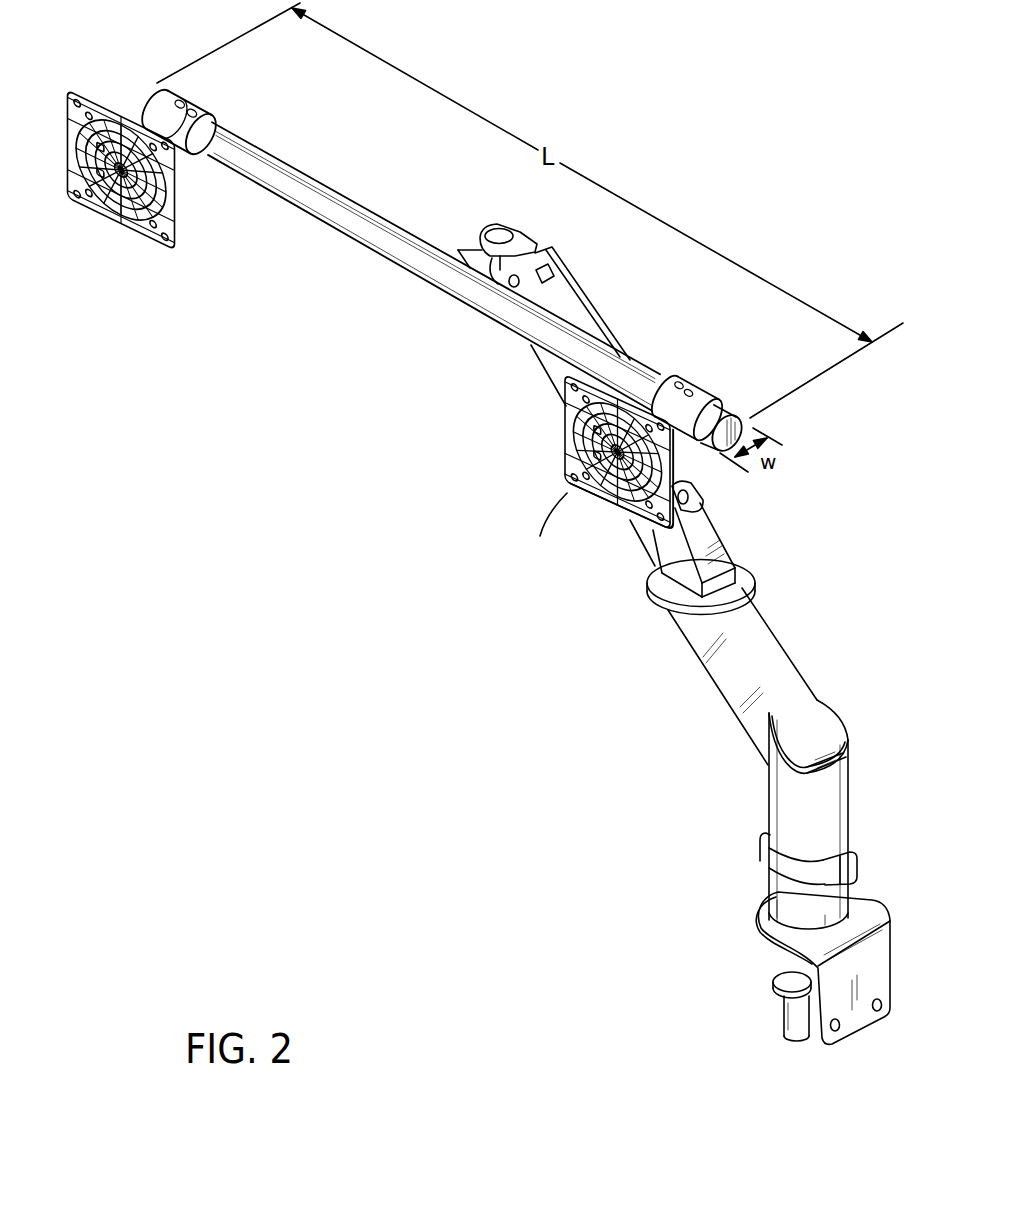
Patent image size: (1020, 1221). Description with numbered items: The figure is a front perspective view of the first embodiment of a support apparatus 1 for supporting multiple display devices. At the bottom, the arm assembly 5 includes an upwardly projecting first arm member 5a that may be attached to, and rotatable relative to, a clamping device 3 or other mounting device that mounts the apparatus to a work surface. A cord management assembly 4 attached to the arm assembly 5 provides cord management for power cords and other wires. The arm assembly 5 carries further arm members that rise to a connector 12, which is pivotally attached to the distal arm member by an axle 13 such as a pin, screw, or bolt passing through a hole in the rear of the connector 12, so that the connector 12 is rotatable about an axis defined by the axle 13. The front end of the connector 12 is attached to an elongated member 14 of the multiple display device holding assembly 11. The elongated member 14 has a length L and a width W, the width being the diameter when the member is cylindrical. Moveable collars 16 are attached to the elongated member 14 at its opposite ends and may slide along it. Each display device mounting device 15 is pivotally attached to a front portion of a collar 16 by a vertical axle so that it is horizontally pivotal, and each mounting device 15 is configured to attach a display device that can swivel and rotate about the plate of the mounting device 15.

The monitor mount assembly 1 is at (727, 222).
The clamping device 3 is at (855, 1011).
The cord management assembly 4 is at (852, 877).
The arm assembly 5 is at (660, 737).
The upwardly projecting first arm member 5a is at (843, 782).
The multiple display device holding assembly 11 is at (305, 372).
The connector 12 is at (457, 249).
The axle 13 is at (503, 233).
The elongated member 14 is at (310, 190).
The display device mounting device 15 is at (122, 228).
The collar 16 is at (203, 103).